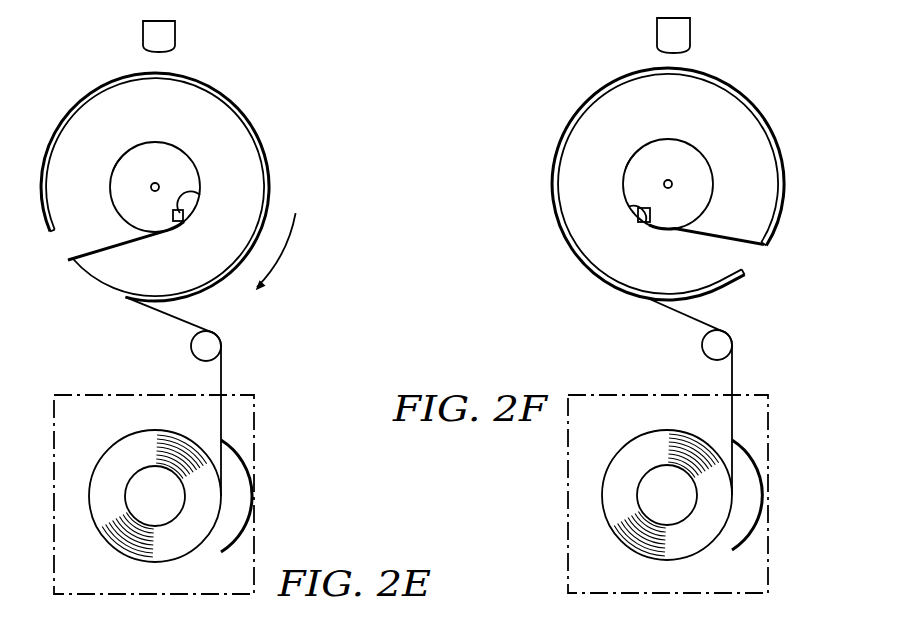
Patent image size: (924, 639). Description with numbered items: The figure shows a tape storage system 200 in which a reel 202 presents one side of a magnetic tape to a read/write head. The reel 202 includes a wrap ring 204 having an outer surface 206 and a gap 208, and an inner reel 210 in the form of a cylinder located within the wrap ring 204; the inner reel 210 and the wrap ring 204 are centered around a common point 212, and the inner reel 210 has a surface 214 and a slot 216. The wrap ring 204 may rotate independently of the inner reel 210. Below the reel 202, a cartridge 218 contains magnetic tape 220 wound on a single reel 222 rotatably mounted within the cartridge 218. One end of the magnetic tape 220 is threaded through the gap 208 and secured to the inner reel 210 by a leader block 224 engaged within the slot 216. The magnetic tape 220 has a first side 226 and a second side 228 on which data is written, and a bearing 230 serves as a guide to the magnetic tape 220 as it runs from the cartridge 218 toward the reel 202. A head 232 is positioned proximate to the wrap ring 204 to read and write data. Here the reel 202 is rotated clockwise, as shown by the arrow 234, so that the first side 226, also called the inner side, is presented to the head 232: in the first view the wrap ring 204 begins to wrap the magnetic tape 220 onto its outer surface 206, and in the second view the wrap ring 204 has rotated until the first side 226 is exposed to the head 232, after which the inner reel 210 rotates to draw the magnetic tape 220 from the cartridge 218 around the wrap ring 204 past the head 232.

In FIG. 2E, the tape storage system 200 is at (268, 86).
In FIG. 2F, the tape storage system 200 is at (565, 62).
In FIG. 2E, the reel 202 is at (284, 172).
In FIG. 2F, the reel 202 is at (544, 224).
In FIG. 2E, the wrap ring 204 is at (200, 78).
In FIG. 2F, the wrap ring 204 is at (716, 76).
In FIG. 2E, the outer surface 206 is at (58, 126).
In FIG. 2F, the outer surface 206 is at (580, 112).
In FIG. 2E, the gap 208 is at (62, 243).
In FIG. 2E, the inner reel 210 is at (163, 148).
In FIG. 2F, the inner reel 210 is at (678, 147).
In FIG. 2E, the point 212 is at (151, 188).
In FIG. 2F, the point 212 is at (664, 184).
In FIG. 2E, the surface 214 is at (123, 155).
In FIG. 2F, the surface 214 is at (640, 148).
In FIG. 2E, the slot 216 is at (195, 200).
In FIG. 2F, the slot 216 is at (711, 176).
In FIG. 2E, the cartridge 218 is at (255, 515).
In FIG. 2F, the cartridge 218 is at (768, 520).
In FIG. 2E, the magnetic tape 220 is at (197, 536).
In FIG. 2F, the magnetic tape 220 is at (707, 535).
In FIG. 2E, the single reel 222 is at (143, 473).
In FIG. 2F, the single reel 222 is at (656, 472).
In FIG. 2E, the leader block 224 is at (183, 221).
In FIG. 2F, the leader block 224 is at (648, 224).
In FIG. 2E, the first side 226 is at (220, 377).
In FIG. 2F, the first side 226 is at (731, 375).
In FIG. 2E, the second side 228 is at (222, 371).
In FIG. 2F, the second side 228 is at (735, 358).
In FIG. 2E, the bearing 230 is at (219, 339).
In FIG. 2F, the bearing 230 is at (725, 332).
In FIG. 2E, the head 232 is at (143, 36).
In FIG. 2F, the head 232 is at (657, 34).
In FIG. 2E, the arrow 234 is at (284, 250).